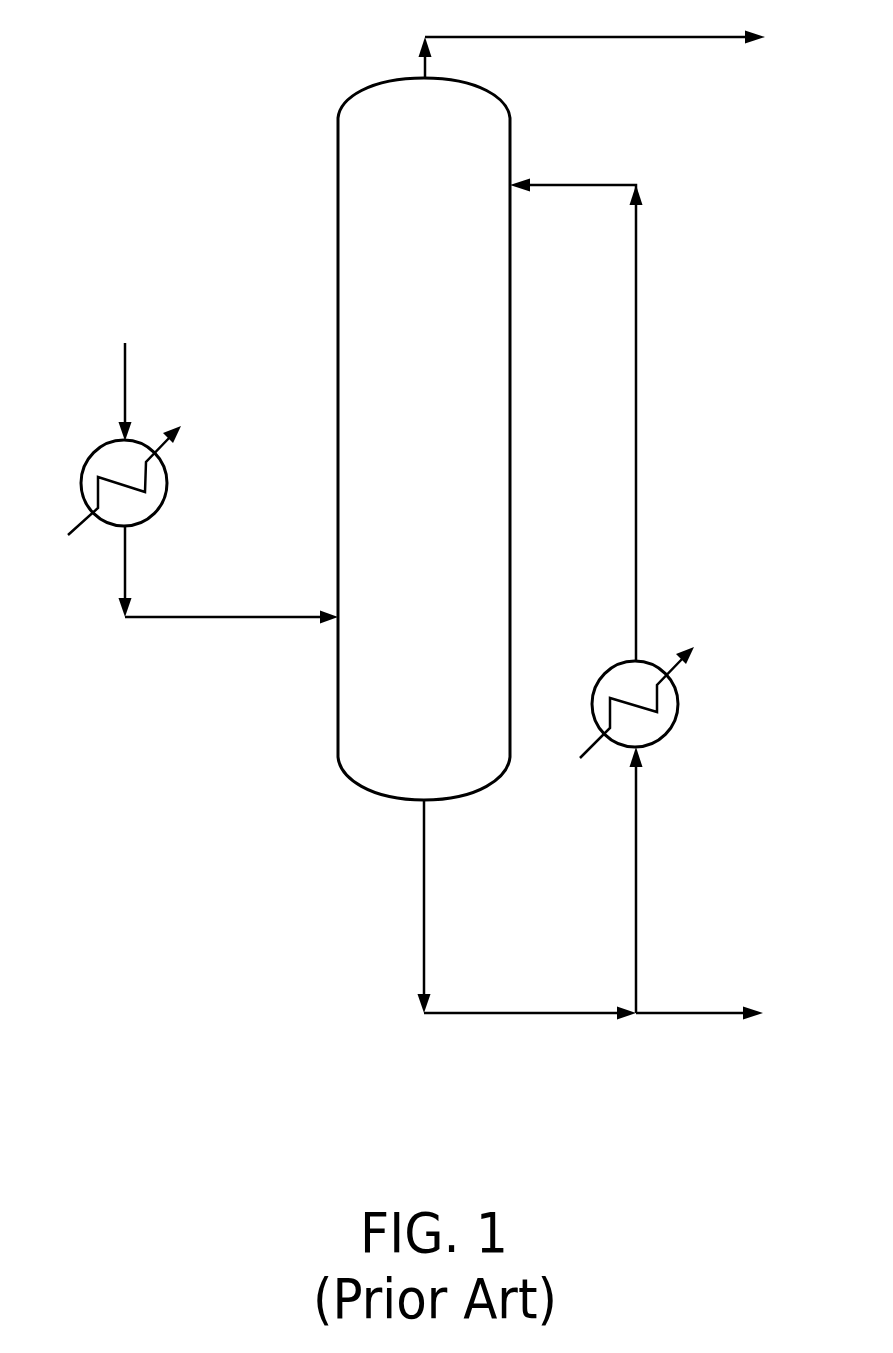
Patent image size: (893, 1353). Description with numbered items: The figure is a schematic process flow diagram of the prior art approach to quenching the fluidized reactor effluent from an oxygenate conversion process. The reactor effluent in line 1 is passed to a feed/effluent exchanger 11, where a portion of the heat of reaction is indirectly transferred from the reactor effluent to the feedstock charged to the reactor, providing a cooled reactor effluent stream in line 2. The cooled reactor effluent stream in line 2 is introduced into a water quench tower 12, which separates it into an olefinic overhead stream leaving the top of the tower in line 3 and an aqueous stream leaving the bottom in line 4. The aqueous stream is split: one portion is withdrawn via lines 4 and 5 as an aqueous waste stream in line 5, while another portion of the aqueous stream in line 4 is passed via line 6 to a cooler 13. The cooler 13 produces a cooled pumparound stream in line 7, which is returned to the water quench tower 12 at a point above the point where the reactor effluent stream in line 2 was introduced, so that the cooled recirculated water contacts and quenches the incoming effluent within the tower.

The line 1 is at (125, 385).
The line 2 is at (150, 618).
The line 3 is at (596, 37).
The line 4 is at (424, 842).
The line 5 is at (668, 1013).
The line 6 is at (637, 795).
The line 7 is at (639, 298).
The feed/effluent exchanger 11 is at (165, 478).
The water quench tower 12 is at (367, 92).
The cooler 13 is at (681, 702).